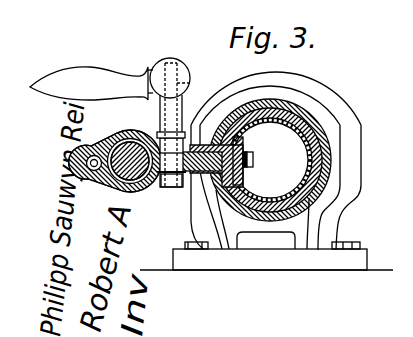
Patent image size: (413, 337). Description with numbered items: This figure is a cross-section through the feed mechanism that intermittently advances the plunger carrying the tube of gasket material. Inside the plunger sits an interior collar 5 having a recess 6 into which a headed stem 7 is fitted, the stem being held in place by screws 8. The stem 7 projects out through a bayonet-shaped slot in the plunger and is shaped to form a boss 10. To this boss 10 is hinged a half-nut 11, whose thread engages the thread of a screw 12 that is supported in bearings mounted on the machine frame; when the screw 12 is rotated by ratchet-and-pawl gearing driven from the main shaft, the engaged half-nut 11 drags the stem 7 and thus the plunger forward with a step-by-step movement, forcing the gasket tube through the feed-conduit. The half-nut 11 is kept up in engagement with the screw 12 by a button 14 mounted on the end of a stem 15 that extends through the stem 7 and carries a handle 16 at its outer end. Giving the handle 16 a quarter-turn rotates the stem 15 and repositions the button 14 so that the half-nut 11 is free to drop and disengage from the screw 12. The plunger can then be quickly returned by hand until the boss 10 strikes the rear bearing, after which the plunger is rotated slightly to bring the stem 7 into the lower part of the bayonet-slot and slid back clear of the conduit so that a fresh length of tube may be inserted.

The interior collar 5 is at (304, 130).
The recess 6 is at (245, 139).
The headed stem 7 is at (246, 173).
The screws 8 is at (254, 160).
The boss 10 is at (142, 133).
The half-nut 11 is at (146, 183).
The screw 12 is at (132, 168).
The button 14 is at (172, 189).
The stem 15 is at (172, 140).
The handle 16 is at (91, 83).